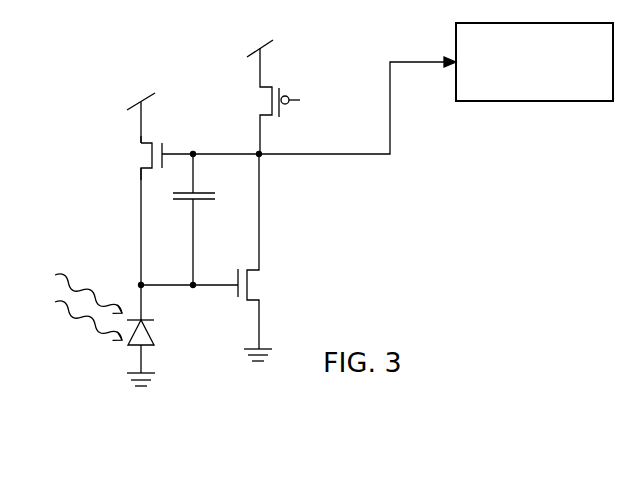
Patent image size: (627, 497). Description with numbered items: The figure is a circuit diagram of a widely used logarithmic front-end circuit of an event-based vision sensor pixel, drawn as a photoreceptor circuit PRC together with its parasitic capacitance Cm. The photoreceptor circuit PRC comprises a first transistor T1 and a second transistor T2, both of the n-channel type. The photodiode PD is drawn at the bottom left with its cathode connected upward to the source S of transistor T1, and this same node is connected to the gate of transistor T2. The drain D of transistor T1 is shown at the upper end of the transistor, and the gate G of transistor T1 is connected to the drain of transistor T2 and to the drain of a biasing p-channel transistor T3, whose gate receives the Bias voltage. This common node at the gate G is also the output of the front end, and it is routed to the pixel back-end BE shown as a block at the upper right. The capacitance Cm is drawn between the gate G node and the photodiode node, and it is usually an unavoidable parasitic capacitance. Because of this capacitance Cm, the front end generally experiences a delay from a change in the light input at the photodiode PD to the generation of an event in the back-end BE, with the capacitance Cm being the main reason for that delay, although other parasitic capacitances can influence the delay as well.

The photoreceptor circuit PRC is at (128, 85).
The first NMOS transistor T1 is at (152, 156).
The drain D is at (127, 136).
The source S is at (127, 182).
The gate G is at (309, 107).
The parasitic capacitance Cm is at (189, 221).
The second NMOS transistor T2 is at (248, 283).
The biasing PMOS transistor T3 is at (276, 100).
The bias Bias is at (316, 102).
The photodiode PD is at (153, 338).
The backend BE is at (548, 85).